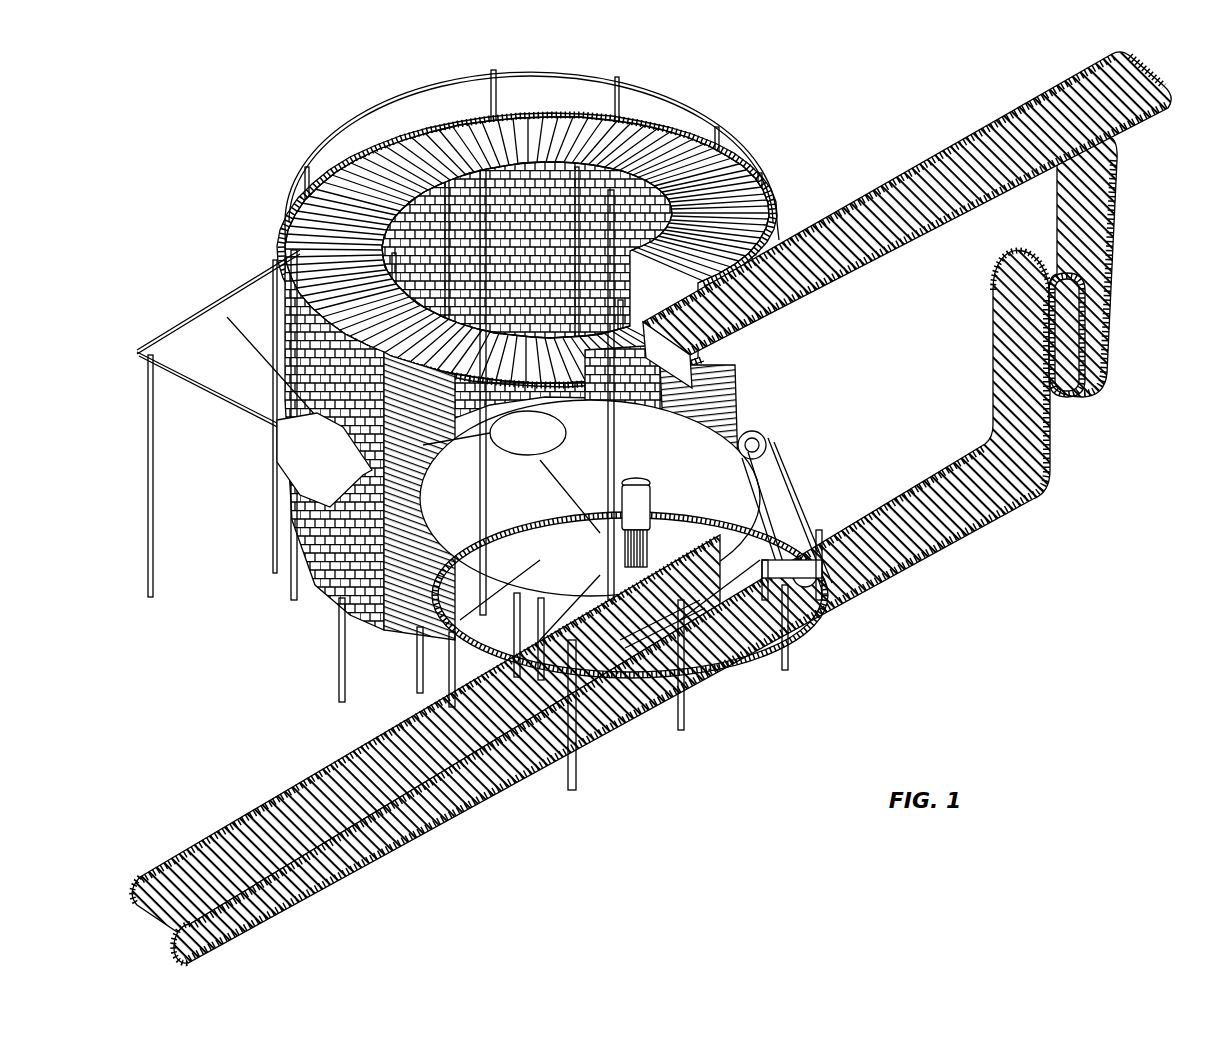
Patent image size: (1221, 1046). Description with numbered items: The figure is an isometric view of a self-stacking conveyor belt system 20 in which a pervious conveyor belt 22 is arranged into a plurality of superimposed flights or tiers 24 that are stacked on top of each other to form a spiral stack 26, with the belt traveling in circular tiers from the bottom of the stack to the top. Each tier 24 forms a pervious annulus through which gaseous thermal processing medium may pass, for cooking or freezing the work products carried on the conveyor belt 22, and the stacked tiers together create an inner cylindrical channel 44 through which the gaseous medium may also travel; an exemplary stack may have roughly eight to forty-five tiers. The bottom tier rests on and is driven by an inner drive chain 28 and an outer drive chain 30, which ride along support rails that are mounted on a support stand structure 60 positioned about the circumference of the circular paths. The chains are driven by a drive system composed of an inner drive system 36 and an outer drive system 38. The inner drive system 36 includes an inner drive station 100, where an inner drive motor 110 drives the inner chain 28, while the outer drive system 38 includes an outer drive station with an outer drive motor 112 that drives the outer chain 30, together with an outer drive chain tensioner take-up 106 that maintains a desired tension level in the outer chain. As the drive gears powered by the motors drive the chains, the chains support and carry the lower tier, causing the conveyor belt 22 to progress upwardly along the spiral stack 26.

The self-stacking conveyor belt system 20 is at (170, 205).
The conveyor belt 22 is at (985, 122).
The tiers 24 is at (663, 153).
The spiral stack 26 is at (303, 455).
The inner drive chain 28 is at (668, 548).
The outer drive chain 30 is at (582, 732).
The inner drive system 36 is at (595, 492).
The outer drive system 38 is at (786, 425).
The inner cylindrical channel 44 is at (524, 190).
The support stand structure 60 is at (330, 670).
The inner drive station 100 is at (290, 598).
The outer drive chain tensioner take-up 106 is at (810, 522).
The inner drive motor 110 is at (660, 690).
The outer drive motor 112 is at (755, 473).